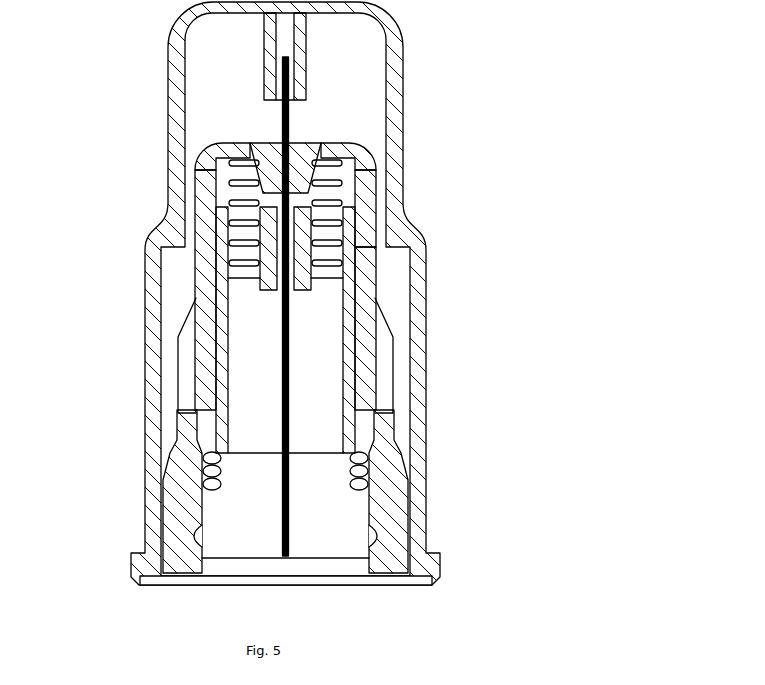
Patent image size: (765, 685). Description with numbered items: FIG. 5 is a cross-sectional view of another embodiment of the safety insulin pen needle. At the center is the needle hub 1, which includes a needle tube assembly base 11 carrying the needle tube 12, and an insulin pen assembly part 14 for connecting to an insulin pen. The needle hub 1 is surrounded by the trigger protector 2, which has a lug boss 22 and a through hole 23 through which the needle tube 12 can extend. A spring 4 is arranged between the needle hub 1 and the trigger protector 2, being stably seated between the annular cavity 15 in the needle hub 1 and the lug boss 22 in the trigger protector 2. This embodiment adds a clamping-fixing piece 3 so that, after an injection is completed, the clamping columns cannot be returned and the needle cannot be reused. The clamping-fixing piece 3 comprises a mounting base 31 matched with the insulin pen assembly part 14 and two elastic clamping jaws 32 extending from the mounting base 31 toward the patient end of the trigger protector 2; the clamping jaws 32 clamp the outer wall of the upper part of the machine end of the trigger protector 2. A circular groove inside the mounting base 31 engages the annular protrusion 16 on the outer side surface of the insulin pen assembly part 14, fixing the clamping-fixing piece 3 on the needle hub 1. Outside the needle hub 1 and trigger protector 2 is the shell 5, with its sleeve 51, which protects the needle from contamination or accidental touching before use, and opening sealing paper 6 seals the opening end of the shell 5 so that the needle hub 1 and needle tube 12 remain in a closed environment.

The needle hub 1 is at (392, 450).
The trigger protector 2 is at (370, 284).
The clamping-fixing piece 3 is at (413, 512).
The spring 4 is at (372, 209).
The shell 5 is at (418, 371).
The opening sealing paper 6 is at (286, 587).
The needle tube assembly base 11 is at (248, 240).
The needle tube 12 is at (289, 118).
The insulin pen assembly part 14 is at (193, 527).
The annular cavity 15 is at (262, 247).
The annular protrusion 16 is at (187, 540).
The lug boss 22 is at (268, 155).
The through hole 23 is at (250, 143).
The mounting base 31 is at (180, 512).
The clamping jaw 32 is at (190, 374).
The sleeve 51 is at (273, 58).